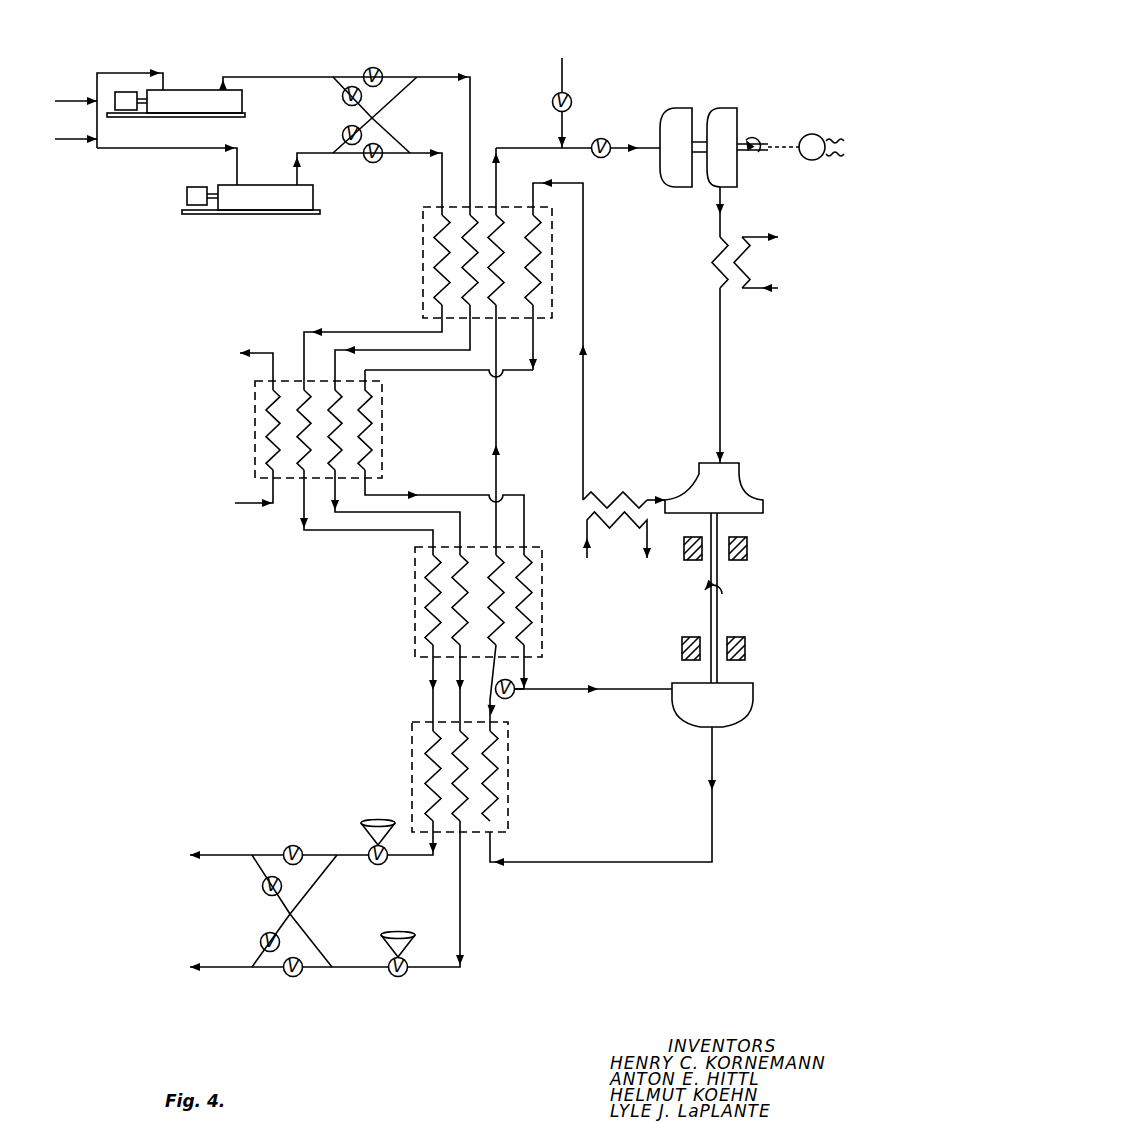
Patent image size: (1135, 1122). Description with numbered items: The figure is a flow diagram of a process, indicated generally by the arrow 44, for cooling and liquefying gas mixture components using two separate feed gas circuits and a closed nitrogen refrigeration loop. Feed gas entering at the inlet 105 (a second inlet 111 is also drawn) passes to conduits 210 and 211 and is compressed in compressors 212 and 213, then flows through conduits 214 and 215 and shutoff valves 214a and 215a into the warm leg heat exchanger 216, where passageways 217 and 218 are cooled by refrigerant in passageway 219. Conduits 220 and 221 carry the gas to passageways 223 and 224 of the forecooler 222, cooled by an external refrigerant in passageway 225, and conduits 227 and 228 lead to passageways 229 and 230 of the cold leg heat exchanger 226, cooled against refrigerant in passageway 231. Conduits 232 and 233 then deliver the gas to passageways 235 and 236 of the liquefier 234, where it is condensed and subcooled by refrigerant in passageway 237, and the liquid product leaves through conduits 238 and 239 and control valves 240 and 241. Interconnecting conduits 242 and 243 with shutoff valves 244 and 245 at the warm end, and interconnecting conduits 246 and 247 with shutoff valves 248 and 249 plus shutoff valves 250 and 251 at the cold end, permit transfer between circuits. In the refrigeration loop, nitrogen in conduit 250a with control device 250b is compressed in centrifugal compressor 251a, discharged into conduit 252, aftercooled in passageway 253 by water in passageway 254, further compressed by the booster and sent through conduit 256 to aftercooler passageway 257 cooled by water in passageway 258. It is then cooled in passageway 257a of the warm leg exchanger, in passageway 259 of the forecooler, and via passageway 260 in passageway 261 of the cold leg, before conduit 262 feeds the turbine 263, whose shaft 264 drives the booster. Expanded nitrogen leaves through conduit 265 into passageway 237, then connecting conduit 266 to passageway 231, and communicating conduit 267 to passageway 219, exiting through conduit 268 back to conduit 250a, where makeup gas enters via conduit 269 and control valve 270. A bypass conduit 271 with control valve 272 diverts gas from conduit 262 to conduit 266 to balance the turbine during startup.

The regeneration system 44 is at (185, 622).
The conduit 105 is at (76, 92).
The feed gas inlet line 111 is at (76, 130).
The conduit 210 is at (118, 72).
The conduit 211 is at (147, 150).
The compressor 212 is at (185, 89).
The compressor 213 is at (260, 184).
The conduit 214 is at (260, 75).
The shutoff valve 214a is at (380, 68).
The conduit 215 is at (305, 150).
The shutoff valve 215a is at (380, 163).
The warm leg heat exchanger 216 is at (423, 270).
The passageway 217 is at (473, 218).
The passageway 218 is at (436, 246).
The passageway 219 is at (505, 222).
The conduit 220 is at (391, 348).
The conduit 221 is at (332, 330).
The forecooler 222 is at (255, 405).
The passageway 223 is at (332, 390).
The passageway 224 is at (300, 390).
The passageway 225 is at (270, 430).
The cold leg heat exchanger 226 is at (415, 621).
The conduit 227 is at (373, 515).
The conduit 228 is at (315, 533).
The passageway 229 is at (462, 562).
The passageway 230 is at (426, 578).
The passageway 231 is at (491, 562).
The conduit 232 is at (460, 673).
The conduit 233 is at (431, 702).
The liquefier 234 is at (412, 739).
The passageway 235 is at (465, 736).
The passageway 236 is at (428, 770).
The passageway 237 is at (493, 779).
The conduit 238 is at (462, 907).
The conduit 239 is at (418, 860).
The control valve 240 is at (366, 832).
The control valve 241 is at (394, 950).
The interconnecting conduit 242 is at (404, 88).
The interconnecting conduit 243 is at (406, 140).
The shutoff valve 244 is at (350, 86).
The shutoff valve 245 is at (351, 146).
The interconnecting conduit 246 is at (322, 878).
The interconnecting conduit 247 is at (318, 940).
The shutoff valve 248 is at (259, 941).
The shutoff valve 249 is at (261, 886).
The shutoff valve 250 is at (290, 844).
The conduit 250a is at (582, 143).
The control device 250b is at (606, 159).
The shutoff valve 251 is at (294, 978).
The centrifugal compressor 251a is at (688, 110).
The conduit 252 is at (723, 199).
The passageway 253 is at (712, 256).
The passageway 254 is at (752, 259).
The conduit 256 is at (660, 497).
The passageway 257 is at (600, 494).
The passageway 257a is at (541, 299).
The passageway 258 is at (618, 530).
The passageway 259 is at (369, 412).
The passageway 260 is at (445, 493).
The passageway 261 is at (530, 601).
The conduit 262 is at (573, 687).
The turbine 263 is at (700, 705).
The shaft 264 is at (716, 614).
The conduit 265 is at (740, 483).
The connecting conduit 266 is at (497, 718).
The communicating conduit 267 is at (499, 465).
The conduit 268 is at (527, 132).
The conduit 269 is at (560, 62).
The control valve 270 is at (553, 98).
The bypass conduit 271 is at (514, 692).
The control valve 272 is at (525, 677).